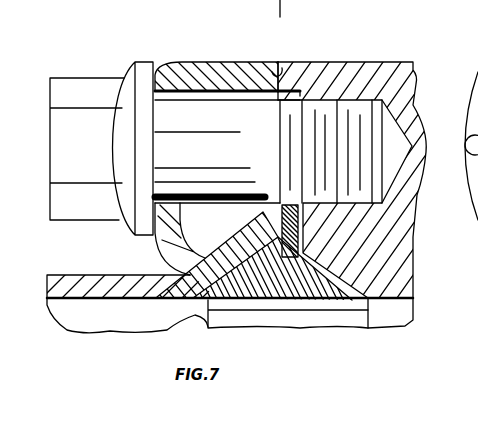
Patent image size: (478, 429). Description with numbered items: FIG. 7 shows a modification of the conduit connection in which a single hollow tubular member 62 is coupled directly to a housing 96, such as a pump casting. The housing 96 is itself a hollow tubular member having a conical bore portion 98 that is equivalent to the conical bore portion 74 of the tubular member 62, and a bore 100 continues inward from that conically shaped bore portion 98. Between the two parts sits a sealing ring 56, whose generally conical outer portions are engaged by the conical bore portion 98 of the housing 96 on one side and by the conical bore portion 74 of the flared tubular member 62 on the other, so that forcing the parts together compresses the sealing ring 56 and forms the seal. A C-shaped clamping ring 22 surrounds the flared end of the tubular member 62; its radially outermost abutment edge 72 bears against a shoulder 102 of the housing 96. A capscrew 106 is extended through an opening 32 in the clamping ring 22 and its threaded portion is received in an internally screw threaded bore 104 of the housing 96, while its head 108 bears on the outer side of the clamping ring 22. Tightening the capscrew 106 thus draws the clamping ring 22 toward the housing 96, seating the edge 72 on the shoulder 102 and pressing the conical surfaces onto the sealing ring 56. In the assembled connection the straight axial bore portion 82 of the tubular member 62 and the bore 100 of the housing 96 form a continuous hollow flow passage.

The clamping ring 22 is at (219, 78).
The opening 32 is at (158, 183).
The sealing ring 56 is at (273, 312).
The hollow tubular member 62 is at (92, 287).
The abutment edge 72 is at (279, 68).
The conical bore portion 74 is at (302, 308).
The axial bore portion 82 is at (140, 303).
The housing 96 is at (380, 277).
The conical bore portion 98 is at (305, 257).
The bore 100 is at (400, 300).
The shoulder 102 is at (307, 62).
The internally screw threaded bore 104 is at (358, 100).
The capscrew 106 is at (199, 107).
The head 108 is at (140, 93).